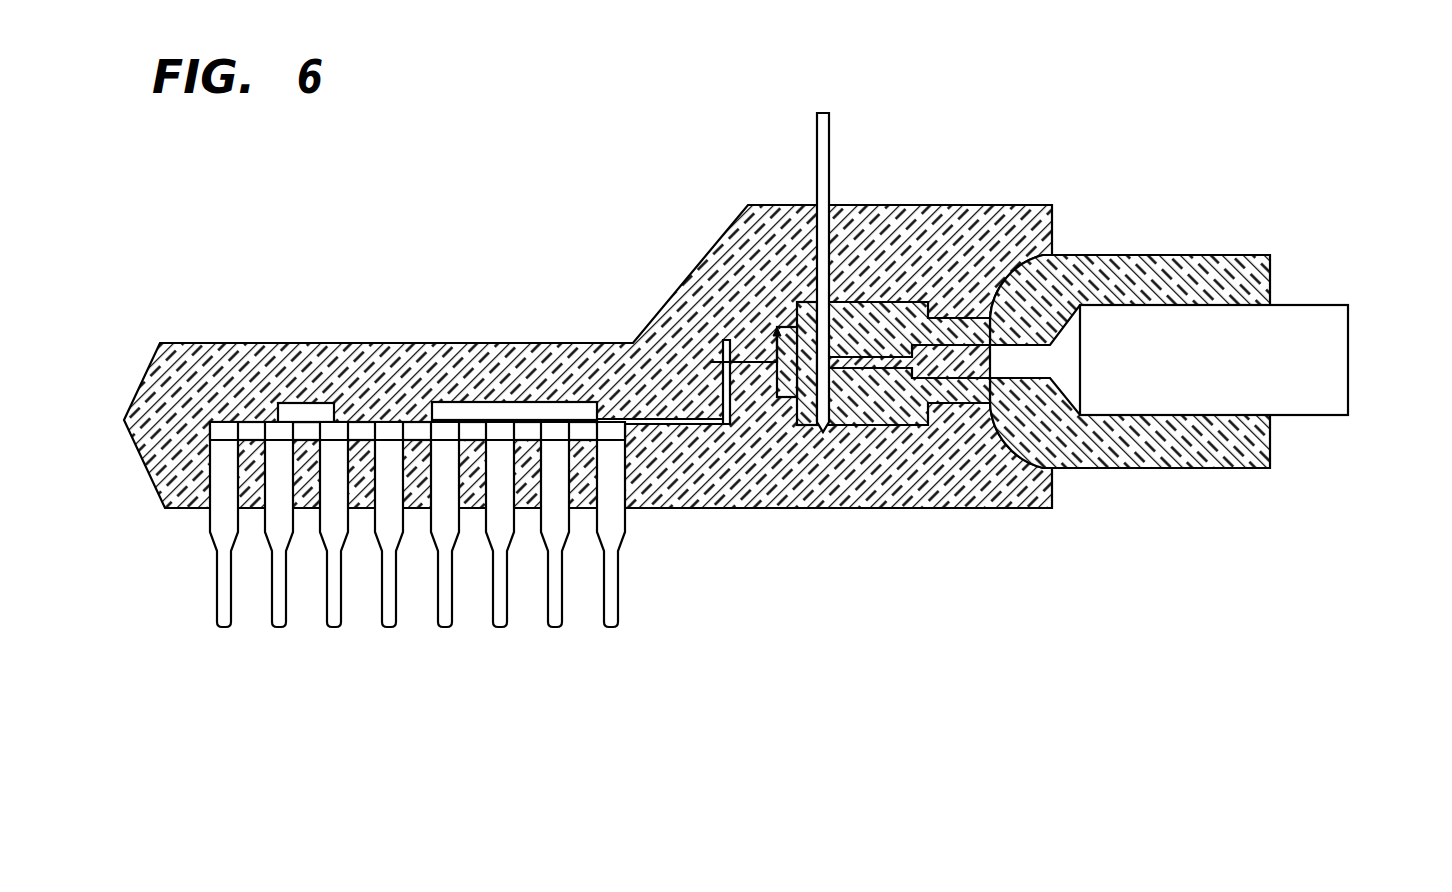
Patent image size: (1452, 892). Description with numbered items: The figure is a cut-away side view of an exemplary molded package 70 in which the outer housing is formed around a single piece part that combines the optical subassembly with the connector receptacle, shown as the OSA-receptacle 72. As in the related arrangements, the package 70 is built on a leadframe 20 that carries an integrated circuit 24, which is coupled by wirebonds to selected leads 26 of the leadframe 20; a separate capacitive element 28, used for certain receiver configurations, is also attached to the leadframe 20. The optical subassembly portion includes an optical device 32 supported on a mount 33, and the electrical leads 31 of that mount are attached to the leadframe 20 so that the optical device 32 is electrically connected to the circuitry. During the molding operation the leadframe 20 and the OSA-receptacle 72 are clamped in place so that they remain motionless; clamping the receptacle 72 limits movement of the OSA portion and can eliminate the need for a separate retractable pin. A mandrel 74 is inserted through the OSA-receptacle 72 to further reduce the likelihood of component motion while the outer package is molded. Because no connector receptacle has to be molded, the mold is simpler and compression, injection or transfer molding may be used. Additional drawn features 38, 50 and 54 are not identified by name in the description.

The leadframe section 20 is at (222, 580).
The integrated circuit 24 is at (515, 402).
The leads 26 is at (619, 638).
The capacitive element 28 is at (318, 403).
The electrical leads 31 is at (752, 362).
The optical device 32 is at (832, 426).
The mount 33 is at (804, 405).
The lead conductor 38 is at (727, 340).
The housing 50 is at (928, 206).
The guide pin 54 is at (824, 115).
The package 70 is at (1146, 628).
The OSA-receptacle 72 is at (1133, 258).
The mandrel 74 is at (1325, 349).